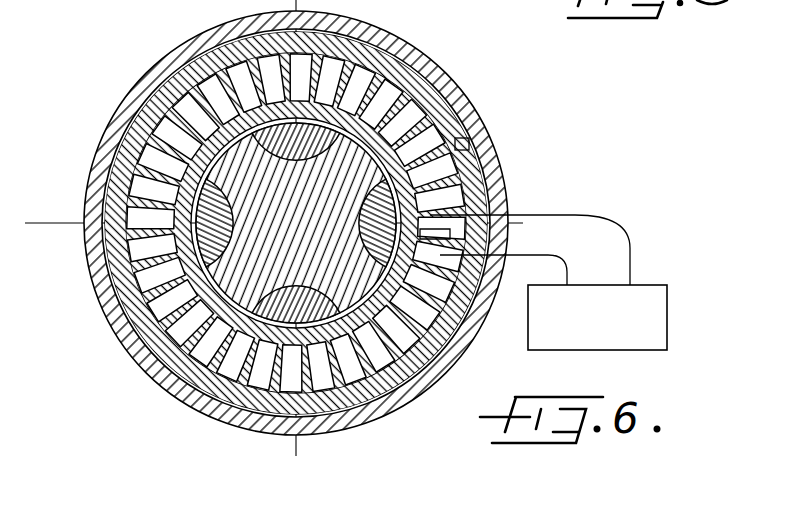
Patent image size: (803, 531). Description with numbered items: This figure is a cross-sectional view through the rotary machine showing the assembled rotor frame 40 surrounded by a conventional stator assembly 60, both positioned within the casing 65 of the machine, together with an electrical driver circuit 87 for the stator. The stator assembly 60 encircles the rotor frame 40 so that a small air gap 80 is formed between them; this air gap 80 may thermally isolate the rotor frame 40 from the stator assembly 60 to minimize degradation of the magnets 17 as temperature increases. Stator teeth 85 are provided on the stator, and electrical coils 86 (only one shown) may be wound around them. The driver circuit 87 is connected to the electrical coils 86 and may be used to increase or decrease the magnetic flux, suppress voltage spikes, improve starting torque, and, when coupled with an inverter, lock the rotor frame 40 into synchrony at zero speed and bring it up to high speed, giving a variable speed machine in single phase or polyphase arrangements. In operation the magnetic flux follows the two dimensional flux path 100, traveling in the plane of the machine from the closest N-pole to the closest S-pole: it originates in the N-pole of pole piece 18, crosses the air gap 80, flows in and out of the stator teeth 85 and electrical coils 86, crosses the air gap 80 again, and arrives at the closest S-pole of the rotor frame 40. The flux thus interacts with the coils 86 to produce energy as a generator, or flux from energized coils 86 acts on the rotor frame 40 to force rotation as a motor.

The magnets 17 is at (412, 42).
The pole piece 18 is at (352, 17).
The rotor frame 40 is at (307, 201).
The stator assembly 60 is at (452, 84).
The casing 65 is at (160, 64).
The air gap 80 is at (215, 120).
The stator teeth 85 is at (462, 148).
The electrical coils 86 is at (480, 229).
The electrical driver circuit 87 is at (672, 303).
The two dimensional flux path 100 is at (452, 345).